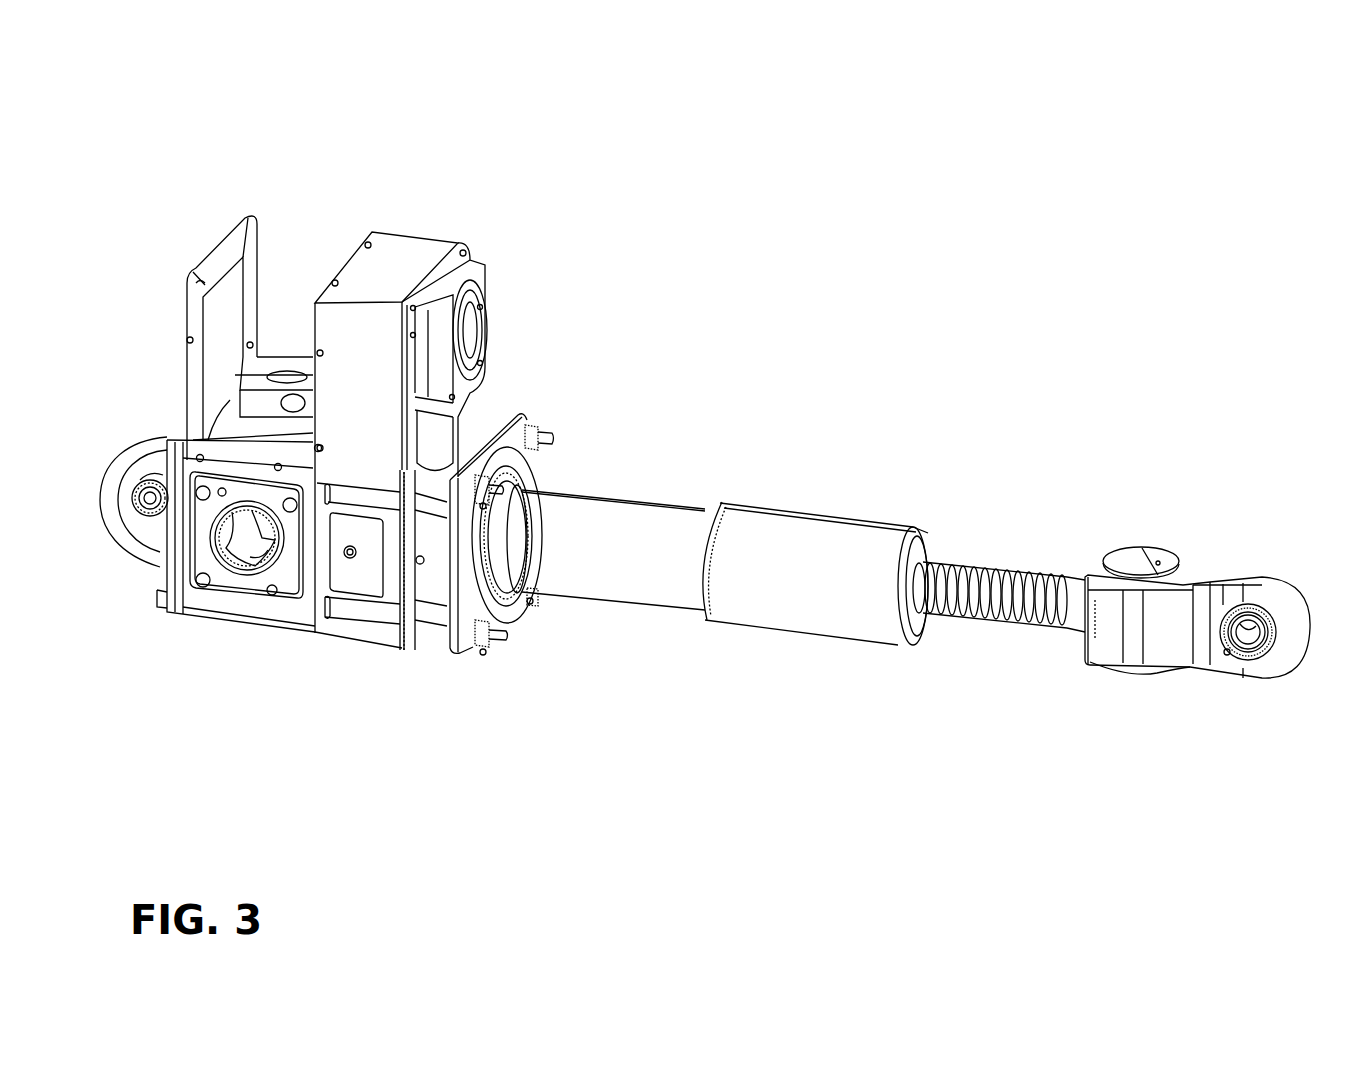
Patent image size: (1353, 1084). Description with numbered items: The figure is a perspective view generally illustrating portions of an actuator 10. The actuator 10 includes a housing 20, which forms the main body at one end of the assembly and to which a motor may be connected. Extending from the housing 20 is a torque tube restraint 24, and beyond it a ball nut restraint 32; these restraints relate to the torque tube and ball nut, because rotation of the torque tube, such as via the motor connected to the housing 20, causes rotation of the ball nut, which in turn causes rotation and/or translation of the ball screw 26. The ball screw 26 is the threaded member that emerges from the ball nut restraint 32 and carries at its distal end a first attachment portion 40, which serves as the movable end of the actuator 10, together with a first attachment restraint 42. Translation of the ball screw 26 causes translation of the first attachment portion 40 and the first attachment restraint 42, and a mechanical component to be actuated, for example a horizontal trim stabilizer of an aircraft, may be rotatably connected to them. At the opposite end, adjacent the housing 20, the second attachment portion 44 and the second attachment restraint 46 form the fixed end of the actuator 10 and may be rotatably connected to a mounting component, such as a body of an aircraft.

The actuator 10 is at (240, 148).
The housing 20 is at (380, 225).
The torque tube restraint 24 is at (640, 530).
The ball nut restraint 32 is at (827, 540).
The ball screw 26 is at (1005, 605).
The first attachment portion 40 is at (1217, 612).
The first attachment restraint 42 is at (1255, 680).
The second attachment portion 44 is at (118, 462).
The second attachment restraint 46 is at (117, 530).